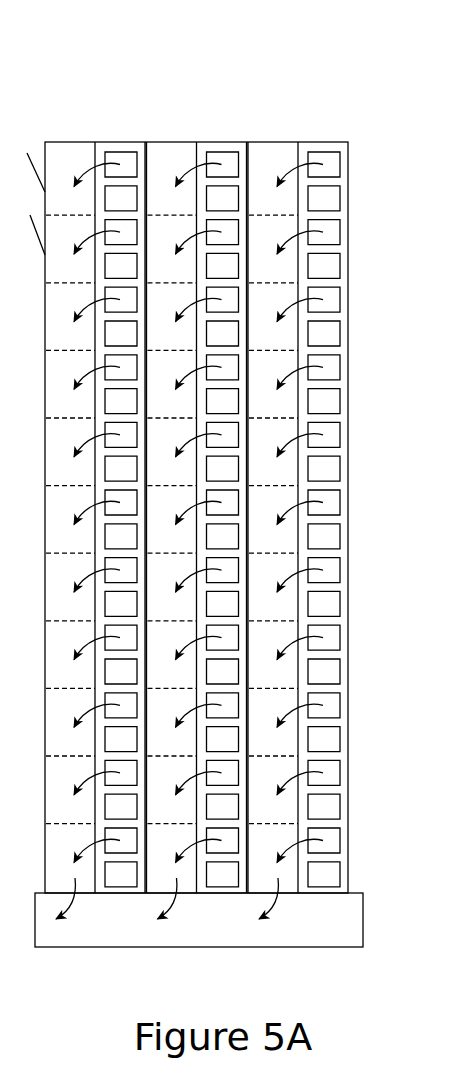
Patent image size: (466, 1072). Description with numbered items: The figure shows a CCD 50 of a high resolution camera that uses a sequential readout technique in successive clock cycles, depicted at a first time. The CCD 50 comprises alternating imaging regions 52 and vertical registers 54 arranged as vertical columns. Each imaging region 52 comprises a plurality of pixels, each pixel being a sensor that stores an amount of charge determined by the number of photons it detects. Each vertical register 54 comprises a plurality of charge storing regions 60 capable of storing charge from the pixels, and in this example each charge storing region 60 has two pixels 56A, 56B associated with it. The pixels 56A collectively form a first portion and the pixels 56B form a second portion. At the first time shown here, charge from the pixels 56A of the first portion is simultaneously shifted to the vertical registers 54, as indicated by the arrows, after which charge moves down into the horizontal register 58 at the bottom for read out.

The CCD 50 is at (118, 76).
The imaging region 52 is at (315, 142).
The vertical register 54 is at (265, 142).
The pixel 56A is at (325, 165).
The pixel 56B is at (325, 198).
The horizontal register 58 is at (363, 920).
The charge storing region 60 is at (45, 330).